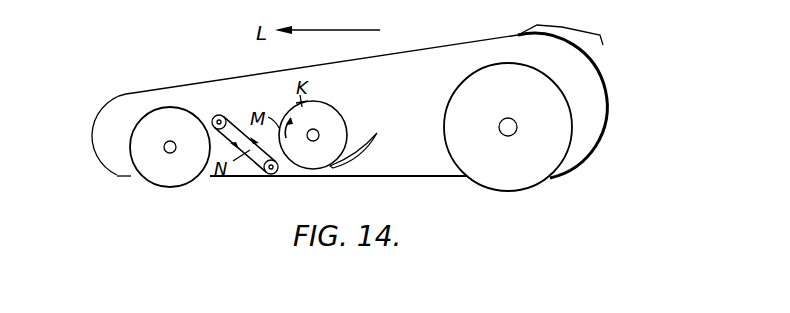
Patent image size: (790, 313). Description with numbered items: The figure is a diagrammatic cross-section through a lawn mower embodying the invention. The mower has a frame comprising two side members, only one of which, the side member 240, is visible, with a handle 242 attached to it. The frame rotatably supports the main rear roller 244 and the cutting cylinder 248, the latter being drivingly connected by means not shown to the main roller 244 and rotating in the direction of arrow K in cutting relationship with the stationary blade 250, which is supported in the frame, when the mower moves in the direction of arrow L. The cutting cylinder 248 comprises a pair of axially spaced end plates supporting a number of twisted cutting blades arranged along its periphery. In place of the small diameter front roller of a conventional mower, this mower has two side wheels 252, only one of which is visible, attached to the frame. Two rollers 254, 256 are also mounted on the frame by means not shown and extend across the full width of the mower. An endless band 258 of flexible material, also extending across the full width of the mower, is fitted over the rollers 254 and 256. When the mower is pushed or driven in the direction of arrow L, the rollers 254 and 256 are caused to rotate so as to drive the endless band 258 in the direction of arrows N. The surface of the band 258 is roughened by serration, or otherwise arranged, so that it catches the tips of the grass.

The side member 240 is at (463, 52).
The handle 242 is at (592, 46).
The main rear roller 244 is at (566, 114).
The cutting cylinder 248 is at (337, 122).
The stationary blade 250 is at (375, 141).
The side wheel 252 is at (142, 130).
The roller 254 is at (218, 116).
The roller 256 is at (271, 175).
The endless band 258 is at (236, 122).